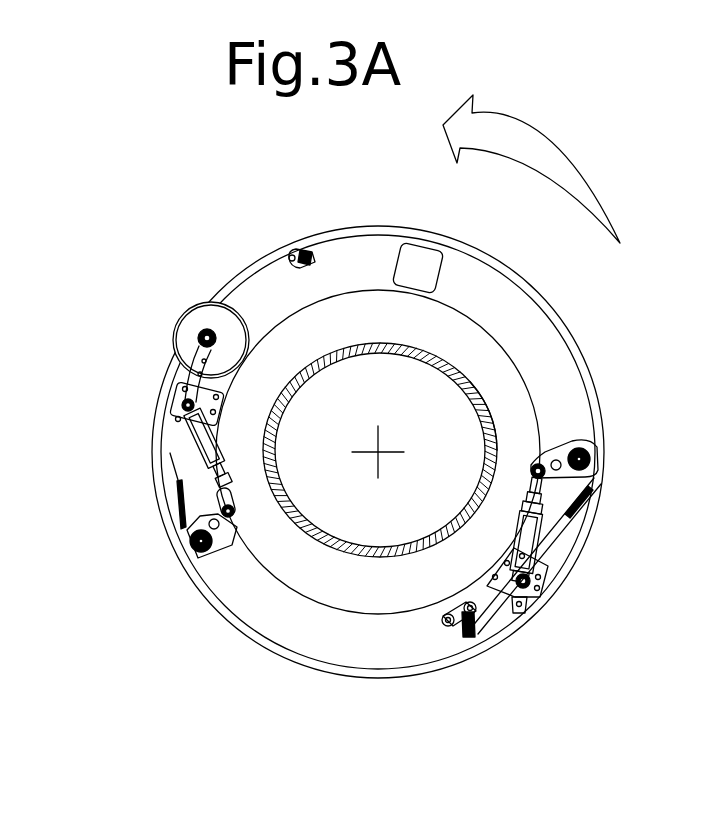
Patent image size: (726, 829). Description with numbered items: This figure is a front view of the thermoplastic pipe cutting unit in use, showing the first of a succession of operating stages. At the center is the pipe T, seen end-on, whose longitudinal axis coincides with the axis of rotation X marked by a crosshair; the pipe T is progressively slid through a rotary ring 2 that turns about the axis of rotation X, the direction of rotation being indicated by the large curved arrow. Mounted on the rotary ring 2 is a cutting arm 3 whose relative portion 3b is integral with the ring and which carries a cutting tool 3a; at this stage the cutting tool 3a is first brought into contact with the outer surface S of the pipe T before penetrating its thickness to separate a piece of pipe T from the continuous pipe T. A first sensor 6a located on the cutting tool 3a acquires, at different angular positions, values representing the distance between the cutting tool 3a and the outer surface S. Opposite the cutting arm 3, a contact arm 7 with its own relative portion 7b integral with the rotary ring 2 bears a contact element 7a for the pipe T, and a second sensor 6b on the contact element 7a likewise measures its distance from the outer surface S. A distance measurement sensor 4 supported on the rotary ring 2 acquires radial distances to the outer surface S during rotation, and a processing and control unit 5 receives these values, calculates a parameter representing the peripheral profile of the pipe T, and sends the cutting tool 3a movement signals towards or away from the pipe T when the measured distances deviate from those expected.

The ring 2 is at (237, 587).
The cutting arm 3 is at (163, 451).
The cutting tool 3a is at (195, 280).
The relative portion 3b is at (163, 377).
The distance measurement sensor 4 is at (304, 233).
The processing and control unit 5 is at (417, 262).
The first sensor 6a is at (190, 330).
The second sensor 6b is at (472, 627).
The contact arm 7 is at (622, 459).
The contact element 7a is at (434, 639).
The relative portion 7b is at (512, 605).
The pipe T is at (450, 345).
The outer surface S is at (470, 382).
The axis of rotation X is at (378, 451).